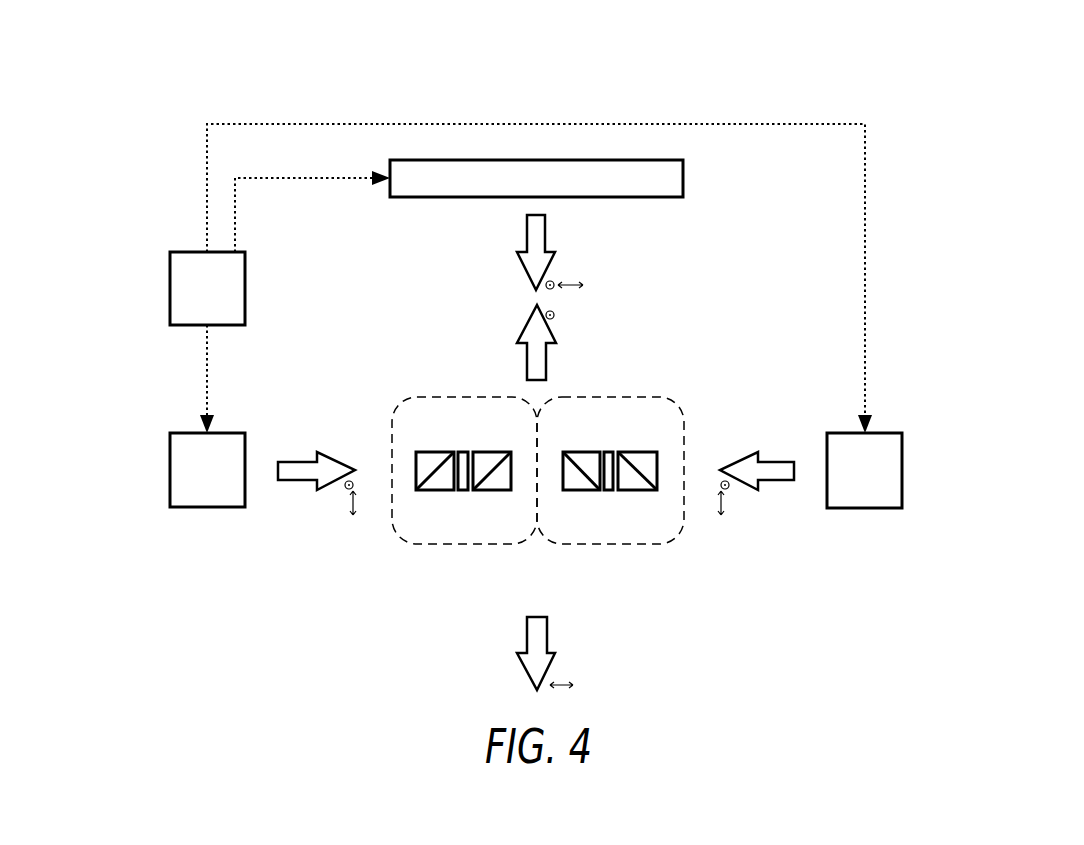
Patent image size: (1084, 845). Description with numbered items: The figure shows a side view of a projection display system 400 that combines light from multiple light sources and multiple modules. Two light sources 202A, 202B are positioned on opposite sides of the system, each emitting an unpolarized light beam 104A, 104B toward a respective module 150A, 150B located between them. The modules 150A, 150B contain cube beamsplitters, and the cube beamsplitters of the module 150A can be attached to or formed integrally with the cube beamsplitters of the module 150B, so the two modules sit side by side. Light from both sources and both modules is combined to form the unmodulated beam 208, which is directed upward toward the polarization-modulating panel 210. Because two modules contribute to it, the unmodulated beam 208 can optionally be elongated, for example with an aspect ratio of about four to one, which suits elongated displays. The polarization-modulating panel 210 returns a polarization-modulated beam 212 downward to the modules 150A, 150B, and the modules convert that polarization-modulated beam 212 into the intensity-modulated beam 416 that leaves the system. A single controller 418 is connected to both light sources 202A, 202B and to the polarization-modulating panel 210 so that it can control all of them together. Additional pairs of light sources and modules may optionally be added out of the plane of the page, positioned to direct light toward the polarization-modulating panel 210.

The projection display system 400 is at (190, 96).
The controller 418 is at (170, 285).
The polarization-modulating panel 210 is at (683, 181).
The polarization-modulated beam 212 is at (527, 222).
The unmodulated beam 208 is at (527, 355).
The unpolarized light beam 104A is at (305, 458).
The unpolarized light beam 104B is at (770, 458).
The light source 202A is at (207, 508).
The light source 202B is at (865, 509).
The module 150A is at (465, 545).
The module 150B is at (610, 545).
The intensity-modulated beam 416 is at (527, 630).